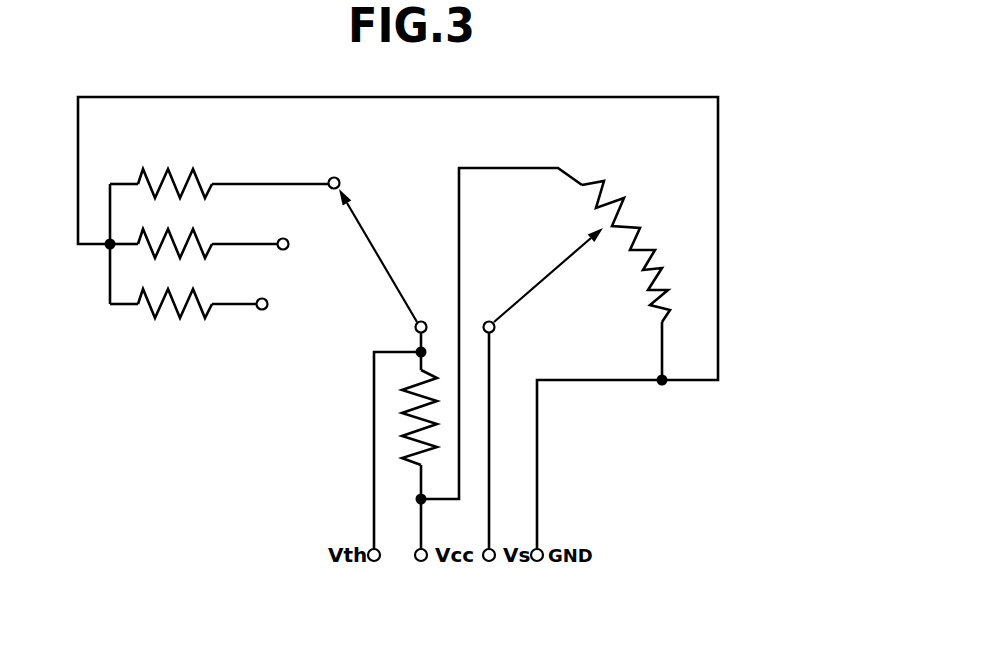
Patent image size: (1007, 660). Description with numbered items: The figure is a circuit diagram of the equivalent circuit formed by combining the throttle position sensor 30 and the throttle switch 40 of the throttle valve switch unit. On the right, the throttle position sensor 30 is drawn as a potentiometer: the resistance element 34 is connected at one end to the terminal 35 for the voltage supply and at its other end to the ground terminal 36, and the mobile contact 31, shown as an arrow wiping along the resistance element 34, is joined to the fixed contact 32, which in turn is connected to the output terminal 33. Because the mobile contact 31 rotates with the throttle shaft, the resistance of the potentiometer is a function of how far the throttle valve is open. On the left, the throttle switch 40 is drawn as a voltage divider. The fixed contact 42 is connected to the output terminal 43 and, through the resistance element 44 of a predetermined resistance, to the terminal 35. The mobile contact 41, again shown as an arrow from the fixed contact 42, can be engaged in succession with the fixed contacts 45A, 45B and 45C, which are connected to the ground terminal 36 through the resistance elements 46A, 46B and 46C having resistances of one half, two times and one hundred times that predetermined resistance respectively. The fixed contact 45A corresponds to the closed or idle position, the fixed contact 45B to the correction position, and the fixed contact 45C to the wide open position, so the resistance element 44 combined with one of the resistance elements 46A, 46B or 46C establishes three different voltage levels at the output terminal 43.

The throttle position sensor 30 is at (577, 410).
The mobile contact 31 is at (535, 283).
The fixed contact 32 is at (495, 329).
The output terminal 33 is at (489, 562).
The resistance element 34 is at (627, 213).
The terminal 35 is at (421, 562).
The ground terminal 36 is at (537, 562).
The throttle switch 40 is at (243, 406).
The mobile contact 41 is at (385, 264).
The fixed contact 42 is at (415, 327).
The output terminal 43 is at (374, 562).
The resistance element 44 is at (398, 425).
The fixed contact 45A is at (340, 178).
The fixed contact 45B is at (290, 248).
The fixed contact 45C is at (262, 310).
The resistance element 46A is at (197, 178).
The resistance element 46B is at (207, 252).
The resistance element 46C is at (175, 315).